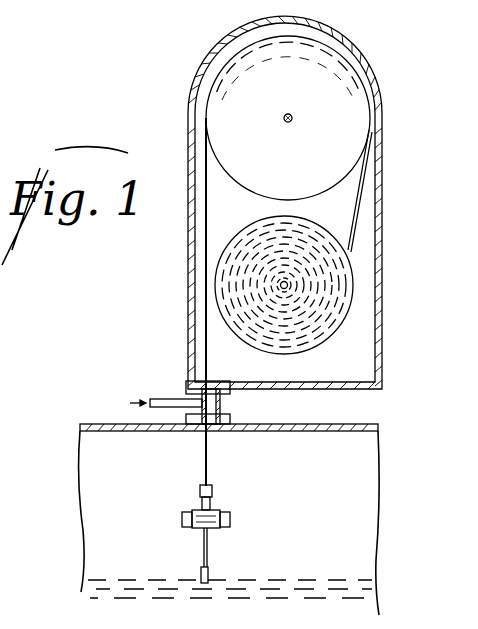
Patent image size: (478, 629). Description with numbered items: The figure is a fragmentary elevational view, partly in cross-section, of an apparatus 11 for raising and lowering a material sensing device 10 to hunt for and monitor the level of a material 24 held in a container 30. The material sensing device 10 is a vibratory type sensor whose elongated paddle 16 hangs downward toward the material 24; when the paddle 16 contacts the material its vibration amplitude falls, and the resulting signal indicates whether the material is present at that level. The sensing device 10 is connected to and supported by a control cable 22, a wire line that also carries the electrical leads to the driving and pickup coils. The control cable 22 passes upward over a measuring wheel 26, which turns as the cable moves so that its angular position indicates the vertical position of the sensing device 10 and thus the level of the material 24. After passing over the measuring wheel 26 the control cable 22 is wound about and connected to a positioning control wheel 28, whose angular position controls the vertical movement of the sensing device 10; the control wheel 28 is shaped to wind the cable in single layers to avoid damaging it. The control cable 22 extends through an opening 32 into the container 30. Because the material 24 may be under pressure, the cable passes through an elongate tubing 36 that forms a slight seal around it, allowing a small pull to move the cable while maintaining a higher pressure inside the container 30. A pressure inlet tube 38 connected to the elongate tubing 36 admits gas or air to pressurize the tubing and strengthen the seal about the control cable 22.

The material sensing device 10 is at (218, 505).
The apparatus 11 is at (385, 257).
The paddle 16 is at (208, 570).
The control cable 22 is at (357, 213).
The material 24 is at (303, 582).
The measuring wheel 26 is at (325, 156).
The positioning control wheel 28 is at (340, 323).
The container 30 is at (317, 432).
The opening 32 is at (200, 433).
The elongate tubing 36 is at (221, 404).
The pressure inlet tube 38 is at (174, 398).